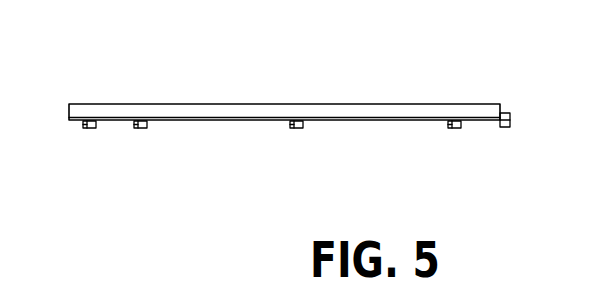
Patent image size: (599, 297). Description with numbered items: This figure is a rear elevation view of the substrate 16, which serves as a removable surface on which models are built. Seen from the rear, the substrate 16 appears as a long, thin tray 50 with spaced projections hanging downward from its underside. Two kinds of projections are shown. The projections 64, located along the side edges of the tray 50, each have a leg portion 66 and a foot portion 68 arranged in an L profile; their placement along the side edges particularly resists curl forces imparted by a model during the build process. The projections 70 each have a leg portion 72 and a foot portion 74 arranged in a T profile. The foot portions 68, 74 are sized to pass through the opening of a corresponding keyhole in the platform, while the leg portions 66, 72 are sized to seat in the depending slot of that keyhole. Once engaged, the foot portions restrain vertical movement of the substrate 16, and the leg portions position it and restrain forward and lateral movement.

The substrate 16 is at (498, 82).
The tray 50 is at (379, 107).
The projection 64 is at (94, 137).
The leg portion 66 is at (97, 126).
The foot portion 68 is at (86, 122).
The projection 70 is at (143, 137).
The leg portion 72 is at (147, 122).
The foot portion 74 is at (136, 129).